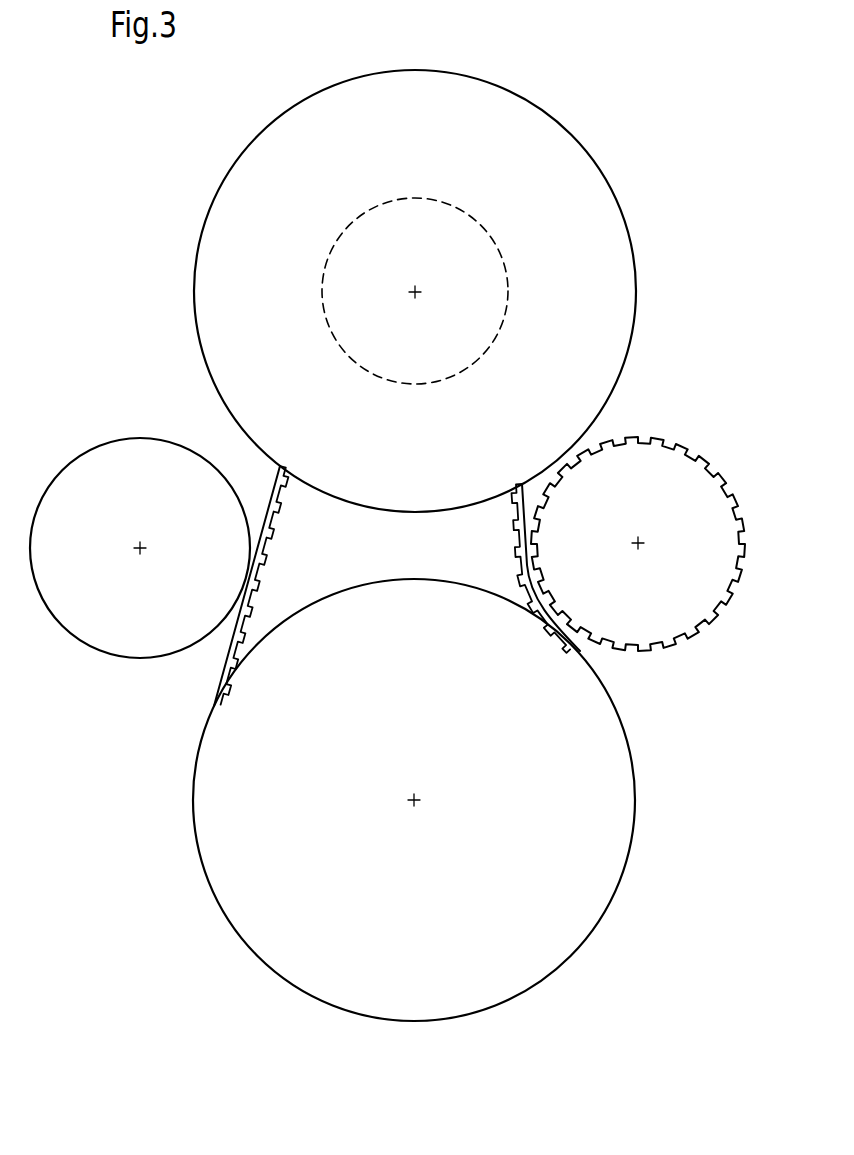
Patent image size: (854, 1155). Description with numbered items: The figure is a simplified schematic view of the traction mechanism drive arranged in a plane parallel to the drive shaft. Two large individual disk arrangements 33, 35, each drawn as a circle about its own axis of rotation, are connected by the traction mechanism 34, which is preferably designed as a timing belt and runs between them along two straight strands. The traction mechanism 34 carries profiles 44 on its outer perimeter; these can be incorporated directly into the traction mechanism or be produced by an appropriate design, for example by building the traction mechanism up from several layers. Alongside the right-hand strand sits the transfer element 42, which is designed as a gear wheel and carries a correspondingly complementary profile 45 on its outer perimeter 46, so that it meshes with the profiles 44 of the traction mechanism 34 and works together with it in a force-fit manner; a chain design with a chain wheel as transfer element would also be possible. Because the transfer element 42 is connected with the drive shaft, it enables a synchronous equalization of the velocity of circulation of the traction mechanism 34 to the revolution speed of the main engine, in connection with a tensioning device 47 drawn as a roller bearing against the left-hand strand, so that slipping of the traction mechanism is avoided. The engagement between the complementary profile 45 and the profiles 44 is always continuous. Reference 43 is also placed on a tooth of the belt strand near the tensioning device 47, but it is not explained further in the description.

The disk arrangement 33 is at (563, 333).
The traction mechanism 34 is at (258, 538).
The disk arrangement 35 is at (597, 792).
The transfer element 42 is at (693, 492).
The belt tooth 43 is at (224, 655).
The profiles 44 is at (225, 637).
The complementary profile 45 is at (672, 438).
The outer perimeter 46 is at (644, 429).
The tensioning device 47 is at (137, 475).